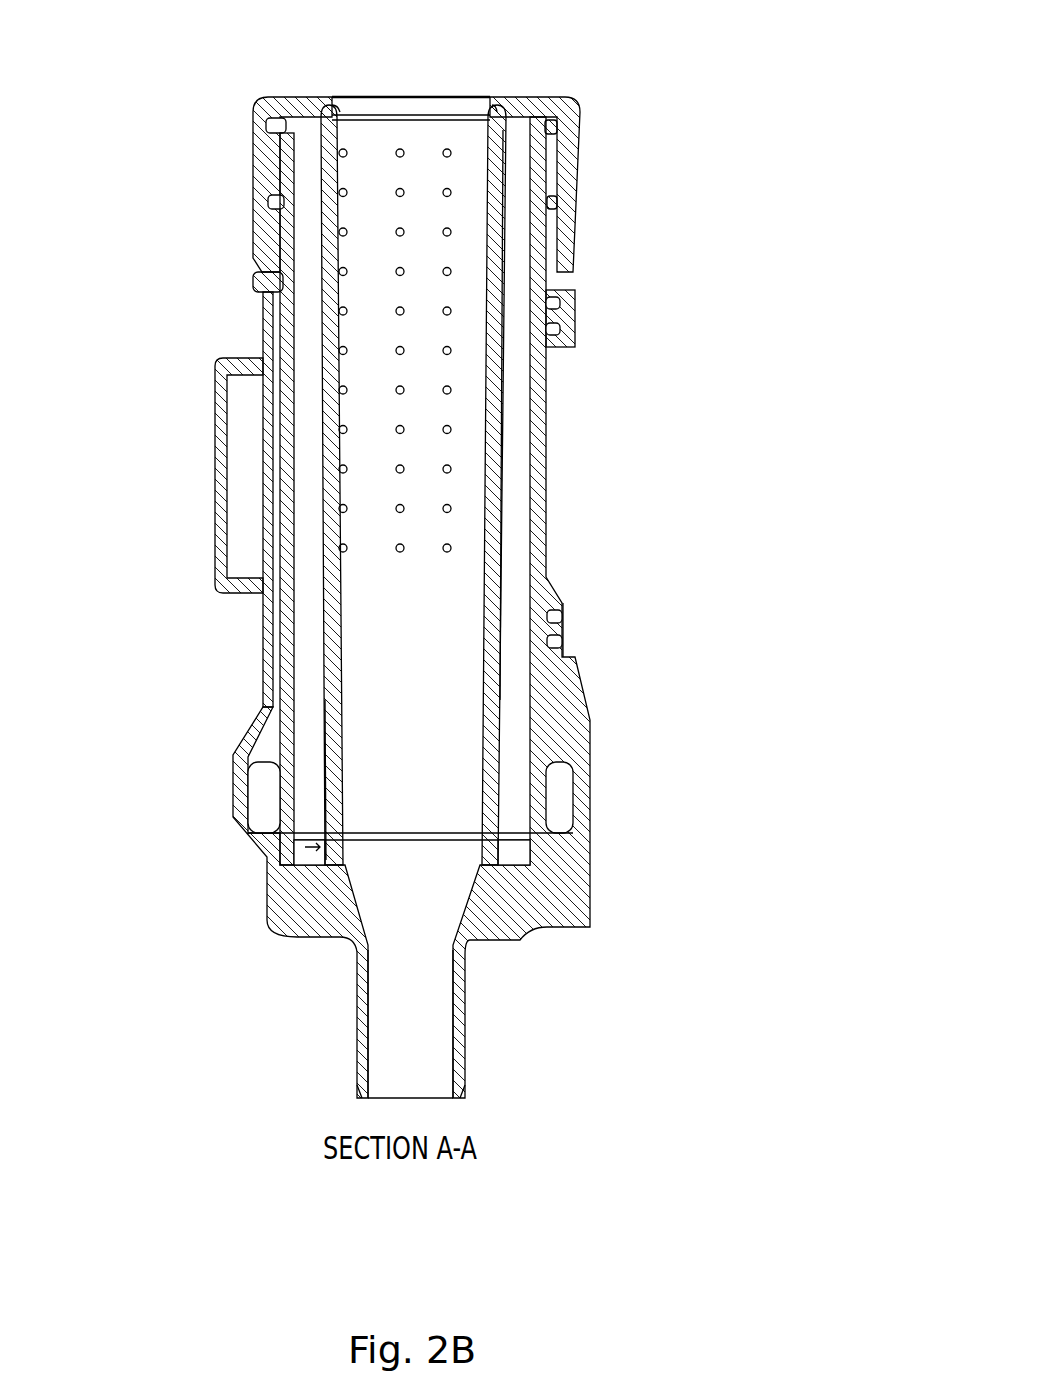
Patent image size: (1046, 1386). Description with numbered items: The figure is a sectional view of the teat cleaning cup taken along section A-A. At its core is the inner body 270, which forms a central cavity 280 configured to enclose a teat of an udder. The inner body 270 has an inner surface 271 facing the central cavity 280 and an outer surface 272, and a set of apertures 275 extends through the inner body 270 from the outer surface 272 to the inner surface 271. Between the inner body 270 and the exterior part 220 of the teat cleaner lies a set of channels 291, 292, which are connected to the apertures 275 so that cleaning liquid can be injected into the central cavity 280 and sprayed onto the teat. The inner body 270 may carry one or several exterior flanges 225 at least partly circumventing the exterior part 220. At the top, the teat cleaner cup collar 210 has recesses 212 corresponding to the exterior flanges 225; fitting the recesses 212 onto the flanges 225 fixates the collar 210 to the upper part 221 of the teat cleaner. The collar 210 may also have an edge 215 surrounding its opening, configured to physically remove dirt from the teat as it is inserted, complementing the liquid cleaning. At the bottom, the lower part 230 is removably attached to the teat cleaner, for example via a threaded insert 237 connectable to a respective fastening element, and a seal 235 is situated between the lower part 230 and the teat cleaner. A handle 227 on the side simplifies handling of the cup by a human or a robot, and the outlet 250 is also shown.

The central cavity 280 is at (411, 54).
The teat cleaner cup collar 210 is at (580, 240).
The recesses 212 is at (557, 128).
The edge 215 is at (497, 110).
The upper part 221 is at (340, 113).
The exterior flanges 225 is at (270, 135).
The exterior part 220 is at (573, 348).
The handle 227 is at (218, 455).
The inner body 270 is at (502, 420).
The inner surface 271 is at (487, 460).
The outer surface 272 is at (502, 505).
The apertures 275 is at (451, 548).
The channel 291 is at (312, 688).
The channel 292 is at (612, 656).
The threaded insert 237 is at (307, 825).
The seal 235 is at (535, 853).
The lower part 230 is at (552, 903).
The outlet spout 250 is at (448, 1090).